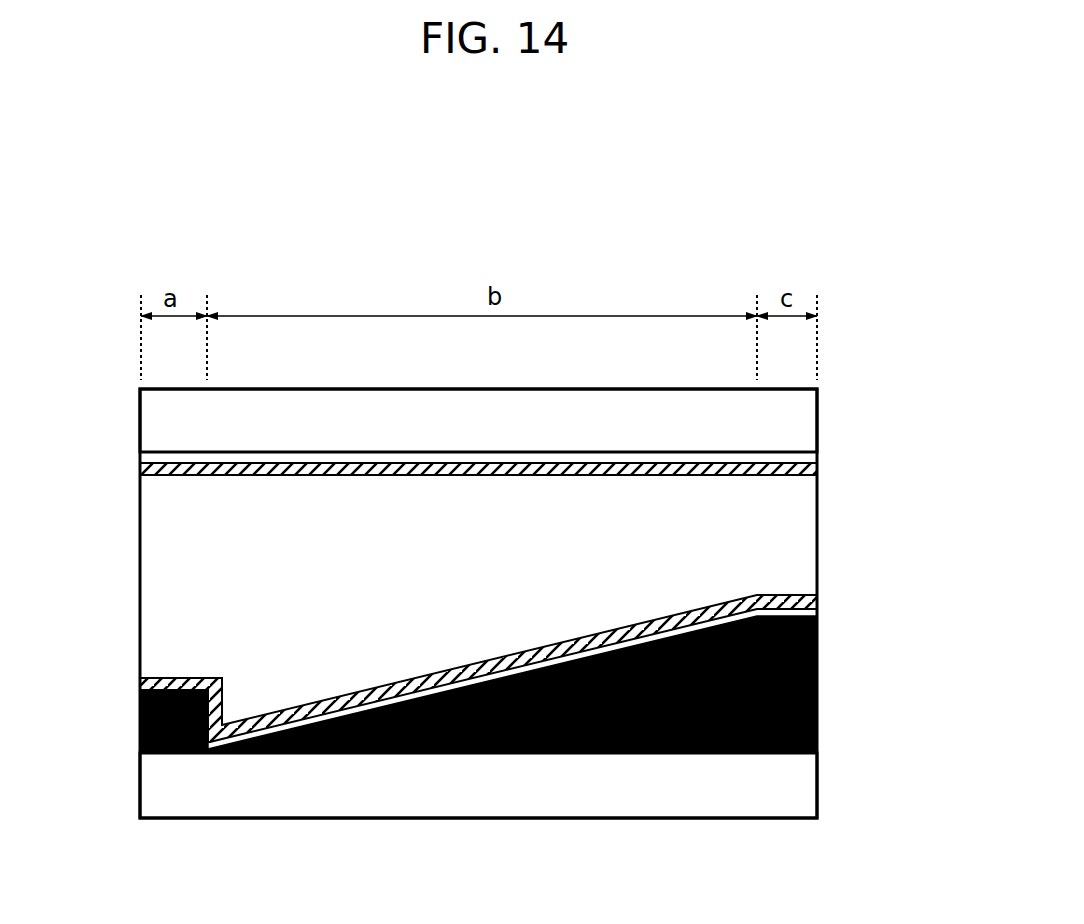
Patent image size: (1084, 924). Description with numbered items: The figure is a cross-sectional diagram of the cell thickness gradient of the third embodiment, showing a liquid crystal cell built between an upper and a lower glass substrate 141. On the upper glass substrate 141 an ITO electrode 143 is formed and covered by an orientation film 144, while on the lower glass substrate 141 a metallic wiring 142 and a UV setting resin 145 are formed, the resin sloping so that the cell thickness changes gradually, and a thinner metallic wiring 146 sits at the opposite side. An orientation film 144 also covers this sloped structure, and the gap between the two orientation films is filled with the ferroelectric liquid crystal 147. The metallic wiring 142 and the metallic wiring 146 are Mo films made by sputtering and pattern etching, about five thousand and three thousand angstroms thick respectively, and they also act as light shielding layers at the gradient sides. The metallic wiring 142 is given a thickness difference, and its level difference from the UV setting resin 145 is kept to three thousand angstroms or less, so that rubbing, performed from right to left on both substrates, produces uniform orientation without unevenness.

The glass substrate 141 is at (797, 419).
The metallic wiring 142 is at (817, 718).
The ITO electrode 143 is at (805, 457).
The orientation film 144 is at (805, 468).
The UV setting resin 145 is at (805, 618).
The metallic wiring 146 is at (138, 733).
The ferroelectric liquid crystal 147 is at (155, 567).